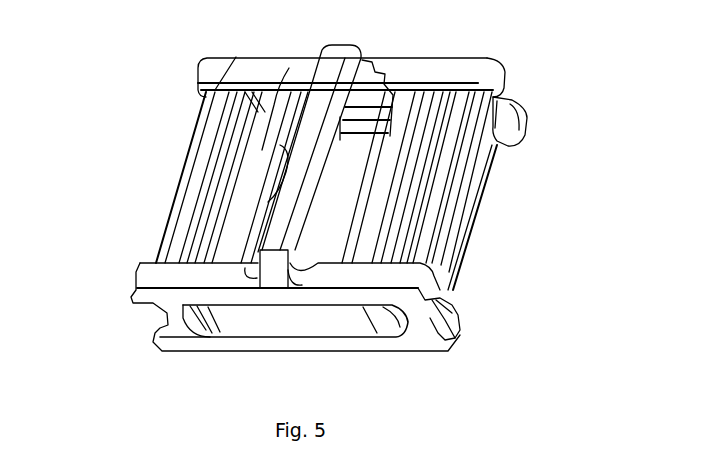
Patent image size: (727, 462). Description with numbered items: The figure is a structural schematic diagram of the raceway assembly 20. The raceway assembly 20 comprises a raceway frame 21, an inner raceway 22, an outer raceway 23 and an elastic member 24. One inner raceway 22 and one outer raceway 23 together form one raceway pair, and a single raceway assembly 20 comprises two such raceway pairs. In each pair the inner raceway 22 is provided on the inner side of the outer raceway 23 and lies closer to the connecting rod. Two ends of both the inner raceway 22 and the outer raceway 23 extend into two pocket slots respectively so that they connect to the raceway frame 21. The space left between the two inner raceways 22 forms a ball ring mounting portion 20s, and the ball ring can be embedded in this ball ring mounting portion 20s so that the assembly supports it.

The raceway assembly 20 is at (172, 134).
The ball ring mounting portion 20s is at (337, 174).
The raceway frame 21 is at (243, 298).
The inner raceway 22 is at (289, 68).
The outer raceway 23 is at (236, 57).
The elastic member 24 is at (292, 322).